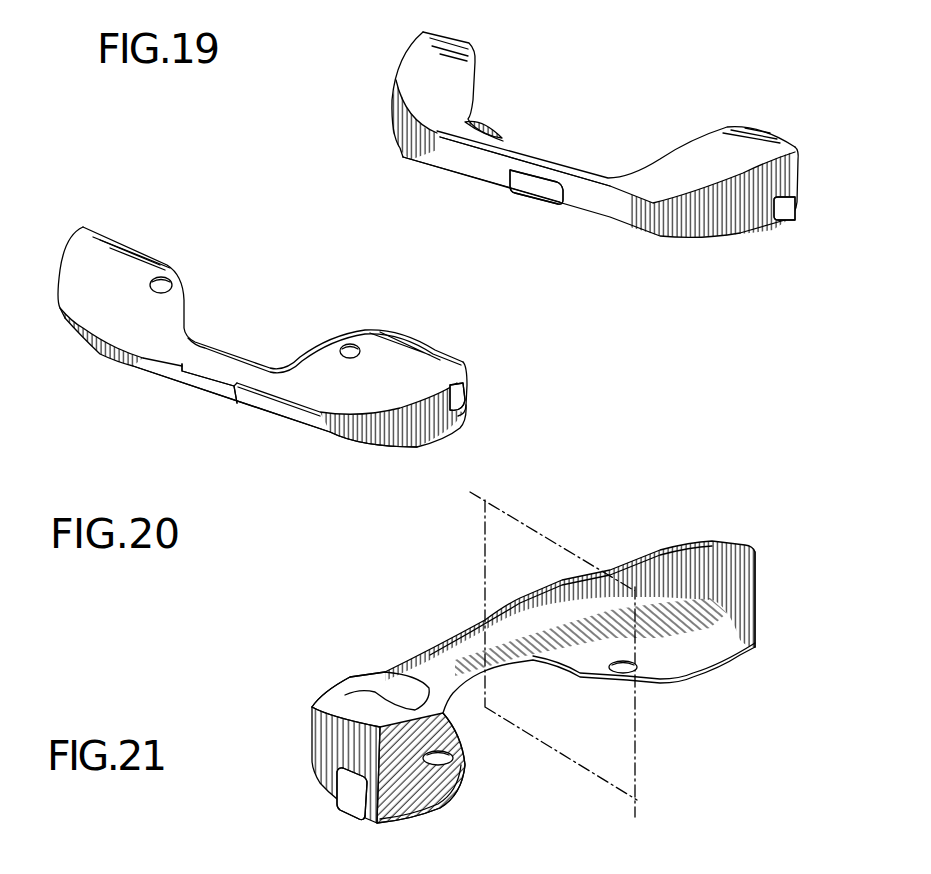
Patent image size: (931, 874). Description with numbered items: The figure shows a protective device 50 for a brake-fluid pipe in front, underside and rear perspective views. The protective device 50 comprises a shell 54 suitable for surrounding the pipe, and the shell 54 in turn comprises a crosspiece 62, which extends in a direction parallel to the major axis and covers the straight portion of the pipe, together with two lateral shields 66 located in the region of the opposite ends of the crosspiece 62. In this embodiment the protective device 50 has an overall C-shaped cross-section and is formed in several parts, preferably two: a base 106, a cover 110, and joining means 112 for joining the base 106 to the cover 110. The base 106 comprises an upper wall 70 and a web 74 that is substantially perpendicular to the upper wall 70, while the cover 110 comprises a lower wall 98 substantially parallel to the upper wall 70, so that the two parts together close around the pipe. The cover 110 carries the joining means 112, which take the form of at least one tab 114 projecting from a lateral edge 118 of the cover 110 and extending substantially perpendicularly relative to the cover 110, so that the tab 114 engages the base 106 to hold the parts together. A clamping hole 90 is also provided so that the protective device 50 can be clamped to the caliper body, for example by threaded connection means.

In FIG. 19, the protective device 50 is at (583, 123).
In FIG. 20, the protective device 50 is at (142, 212).
In FIG. 21, the protective device 50 is at (717, 523).
In FIG. 21, the shell 54 is at (343, 695).
In FIG. 21, the crosspiece 62 is at (433, 660).
In FIG. 21, the lateral shields 66 is at (317, 740).
In FIG. 19, the upper wall 70 is at (410, 66).
In FIG. 19, the web 74 is at (483, 167).
In FIG. 20, the web 74 is at (157, 370).
In FIG. 20, the clamping hole 90 is at (164, 278).
In FIG. 21, the clamping hole 90 is at (447, 760).
In FIG. 20, the lower wall 98 is at (95, 277).
In FIG. 21, the base 106 is at (747, 597).
In FIG. 21, the cover 110 is at (700, 645).
In FIG. 19, the joining means 112 is at (538, 190).
In FIG. 20, the joining means 112 is at (63, 243).
In FIG. 21, the joining means 112 is at (347, 802).
In FIG. 19, the tab 114 is at (652, 247).
In FIG. 20, the tab 114 is at (304, 324).
In FIG. 21, the tab 114 is at (292, 798).
In FIG. 19, the lateral edge 118 is at (417, 163).
In FIG. 20, the lateral edge 118 is at (317, 398).
In FIG. 21, the lateral edge 118 is at (370, 822).